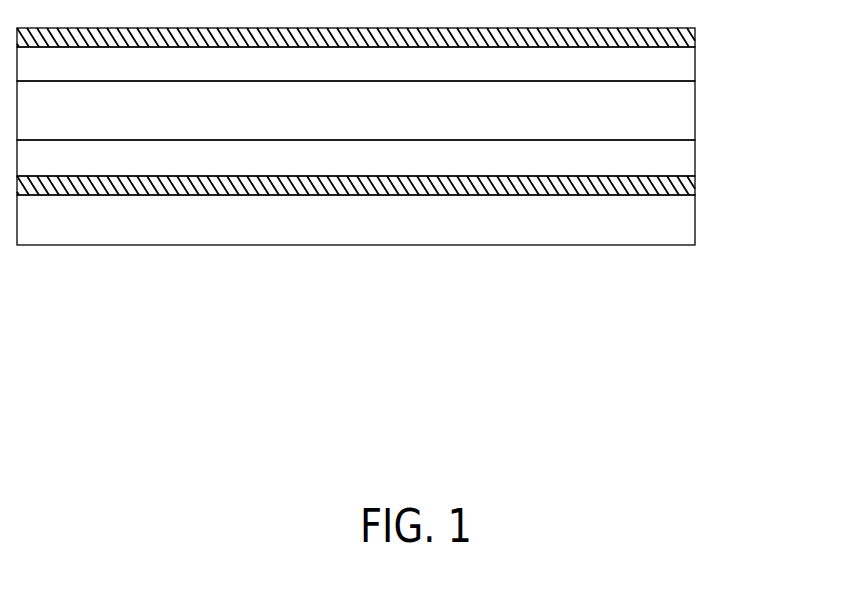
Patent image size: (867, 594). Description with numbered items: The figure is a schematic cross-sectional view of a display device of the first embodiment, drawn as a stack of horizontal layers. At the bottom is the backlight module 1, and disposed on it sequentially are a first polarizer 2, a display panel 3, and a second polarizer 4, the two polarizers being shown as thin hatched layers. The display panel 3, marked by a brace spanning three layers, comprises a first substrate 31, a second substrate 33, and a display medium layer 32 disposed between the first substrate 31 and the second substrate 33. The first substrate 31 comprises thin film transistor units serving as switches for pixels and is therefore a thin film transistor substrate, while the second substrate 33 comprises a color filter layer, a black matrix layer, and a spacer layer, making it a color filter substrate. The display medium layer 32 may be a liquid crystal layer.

The backlight module 1 is at (695, 218).
The first polarizer 2 is at (695, 186).
The display panel 3 is at (407, 111).
The first substrate 31 is at (391, 157).
The display medium layer 32 is at (695, 110).
The second substrate 33 is at (695, 64).
The second polarizer 4 is at (695, 35).